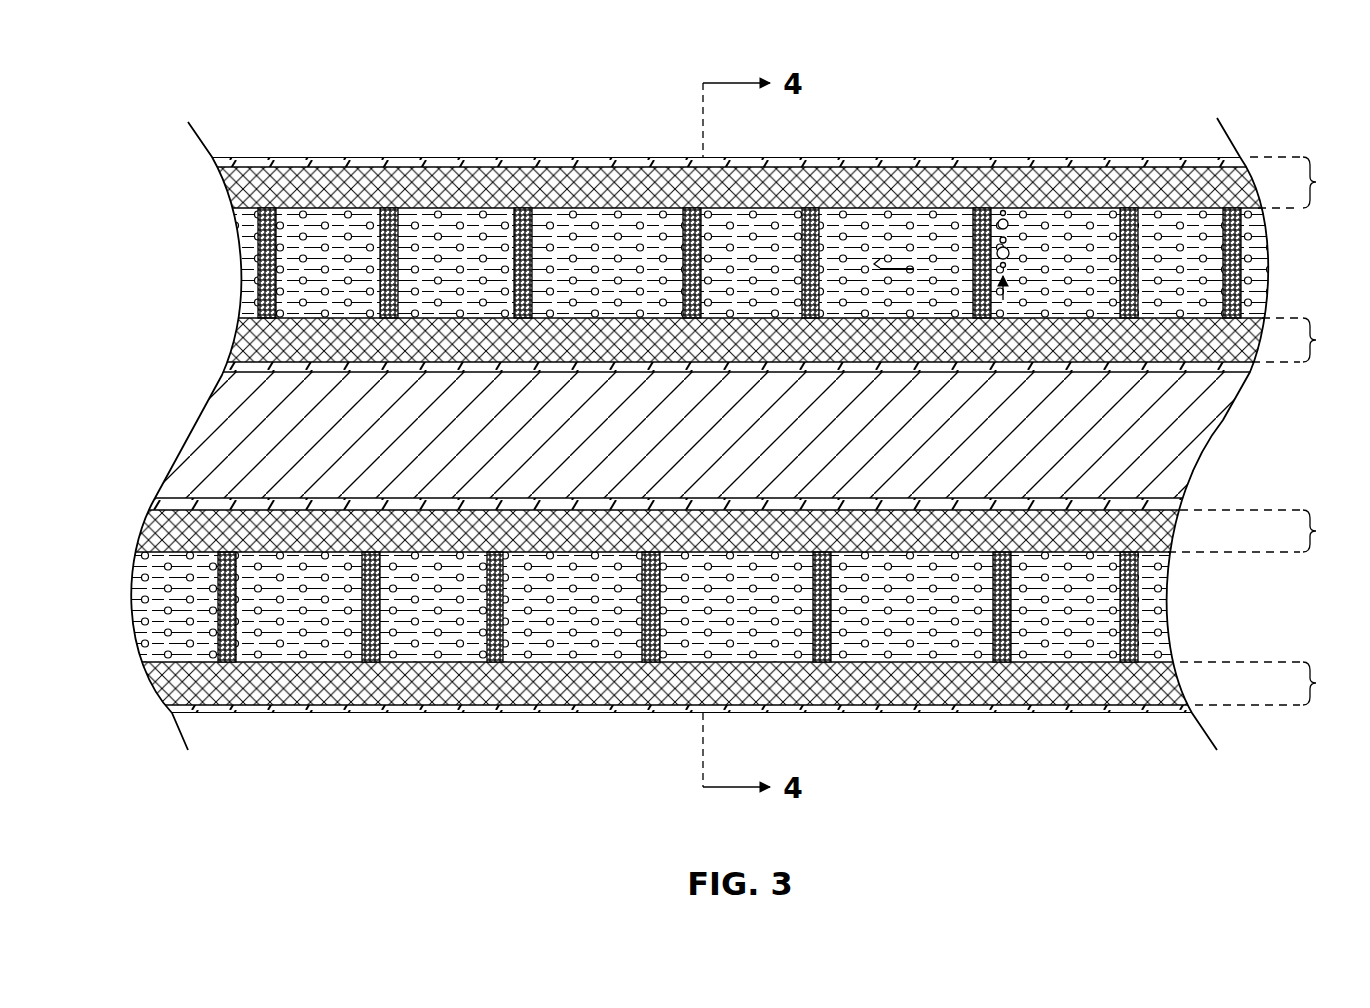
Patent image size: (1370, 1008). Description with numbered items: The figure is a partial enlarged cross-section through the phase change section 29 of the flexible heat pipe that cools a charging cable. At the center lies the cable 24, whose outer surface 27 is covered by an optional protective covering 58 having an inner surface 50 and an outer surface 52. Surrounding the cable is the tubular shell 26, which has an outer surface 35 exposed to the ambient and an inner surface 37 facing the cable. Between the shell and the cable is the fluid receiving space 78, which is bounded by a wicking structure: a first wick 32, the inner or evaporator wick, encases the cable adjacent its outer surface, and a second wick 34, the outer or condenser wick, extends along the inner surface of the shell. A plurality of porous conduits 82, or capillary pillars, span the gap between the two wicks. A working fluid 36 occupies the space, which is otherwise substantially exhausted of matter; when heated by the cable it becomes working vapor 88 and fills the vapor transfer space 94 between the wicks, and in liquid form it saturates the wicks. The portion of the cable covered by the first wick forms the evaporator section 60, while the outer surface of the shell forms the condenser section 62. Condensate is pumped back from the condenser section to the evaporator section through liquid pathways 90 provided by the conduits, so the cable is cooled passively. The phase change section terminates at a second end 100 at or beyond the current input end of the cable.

The phase change section 29 is at (336, 57).
The tubular shell 26 is at (255, 157).
The outer surface 35 is at (332, 157).
The inner surface 37 is at (842, 170).
The second wick 34 is at (228, 188).
The conduits 82 is at (430, 205).
The second end 100 is at (617, 232).
The vapor transfer space 94 is at (868, 220).
The working vapor 88 is at (1003, 213).
The working fluid 36 is at (1052, 337).
The liquid pathways 90 is at (1132, 220).
The condenser section 62 is at (1267, 431).
The evaporator section 60 is at (1261, 435).
The protective covering 58 is at (1247, 367).
The first wick 32 is at (235, 343).
The cable 24 is at (210, 437).
The inner surface 50 is at (433, 372).
The outer surface 52 is at (553, 365).
The outer surface 27 is at (1097, 368).
The fluid receiving space 78 is at (894, 256).